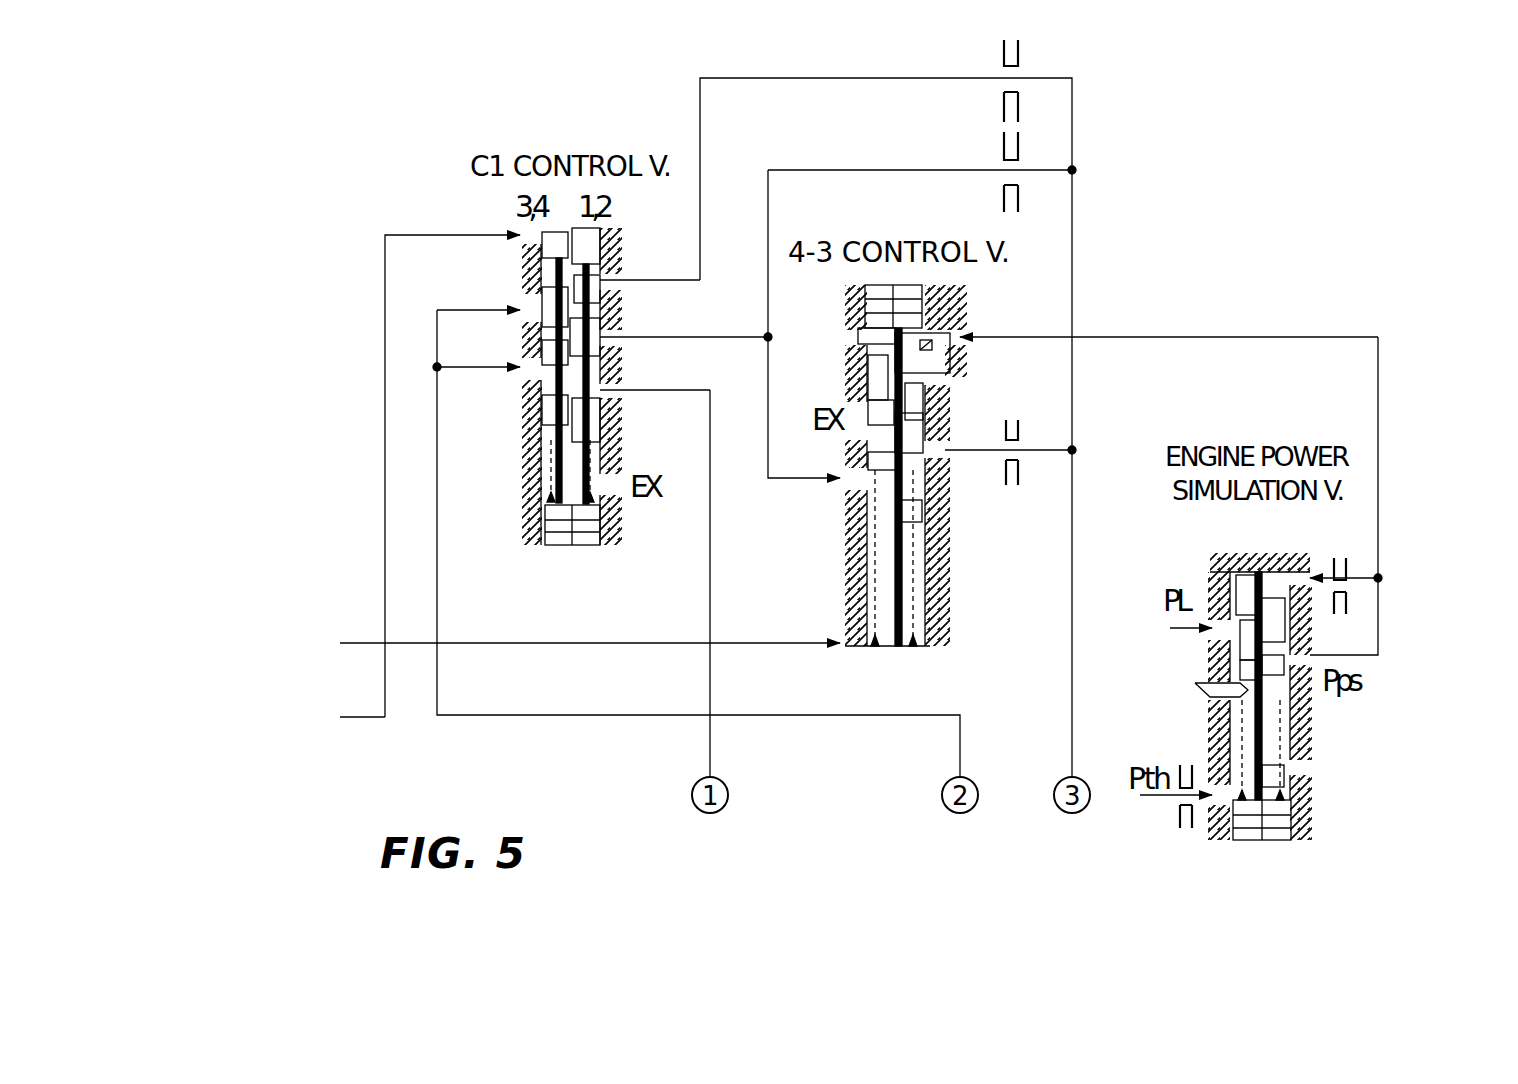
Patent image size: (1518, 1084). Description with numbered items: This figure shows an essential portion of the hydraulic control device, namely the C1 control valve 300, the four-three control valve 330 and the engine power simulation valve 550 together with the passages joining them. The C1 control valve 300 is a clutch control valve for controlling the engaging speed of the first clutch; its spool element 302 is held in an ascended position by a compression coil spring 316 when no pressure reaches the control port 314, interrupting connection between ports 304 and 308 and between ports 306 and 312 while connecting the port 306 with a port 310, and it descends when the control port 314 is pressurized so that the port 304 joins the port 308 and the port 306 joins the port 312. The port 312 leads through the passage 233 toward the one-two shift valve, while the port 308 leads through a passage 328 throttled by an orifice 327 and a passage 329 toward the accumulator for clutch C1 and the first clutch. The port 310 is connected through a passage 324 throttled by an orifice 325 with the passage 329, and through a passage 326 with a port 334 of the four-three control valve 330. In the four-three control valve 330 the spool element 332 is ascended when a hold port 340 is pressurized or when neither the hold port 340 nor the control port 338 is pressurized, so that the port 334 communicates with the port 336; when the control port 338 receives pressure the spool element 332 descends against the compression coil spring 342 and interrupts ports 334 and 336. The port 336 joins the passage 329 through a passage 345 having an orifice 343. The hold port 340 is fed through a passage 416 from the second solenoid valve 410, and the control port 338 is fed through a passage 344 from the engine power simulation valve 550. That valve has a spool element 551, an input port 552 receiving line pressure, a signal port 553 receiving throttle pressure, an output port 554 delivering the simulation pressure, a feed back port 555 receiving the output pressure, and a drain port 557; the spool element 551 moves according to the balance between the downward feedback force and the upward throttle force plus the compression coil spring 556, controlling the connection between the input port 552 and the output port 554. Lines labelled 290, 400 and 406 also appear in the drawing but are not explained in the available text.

The C1 control valve 300 is at (620, 527).
The control port 314 is at (522, 225).
The port 304 is at (528, 300).
The port 310 is at (610, 330).
The spool element 302 is at (520, 345).
The port 306 is at (525, 383).
The compression coil spring 316 is at (606, 455).
The port 308 is at (618, 272).
The port 312 is at (615, 385).
The passage 233 is at (712, 564).
The passage 328 is at (843, 78).
The passage 324 is at (918, 170).
The orifice 327 is at (1018, 52).
The orifice 325 is at (1018, 148).
The passage 345 is at (1045, 450).
The orifice 343 is at (1018, 470).
The passage 329 is at (1072, 495).
The solenoid valve line 406 is at (387, 235).
The solenoid valve 400 is at (248, 718).
The second solenoid valve 410 is at (476, 651).
The fluid line 290 is at (437, 600).
The 4-3 control valve 330 is at (950, 597).
The control port 338 is at (958, 325).
The passage 344 is at (1378, 385).
The port 336 is at (940, 435).
The spool element 332 is at (925, 485).
The compression coil spring 342 is at (920, 555).
The port 334 is at (858, 486).
The passage 326 is at (768, 478).
The passage 416 is at (802, 632).
The hold port 340 is at (852, 650).
The engine power simulation valve 550 is at (1318, 760).
The feed back port 555 is at (1335, 545).
The output port 554 is at (1300, 650).
The input port 552 is at (1222, 632).
The drain port 557 is at (1210, 690).
The spool element 551 is at (1300, 720).
The compression coil spring 556 is at (1295, 778).
The signal port 553 is at (1225, 805).